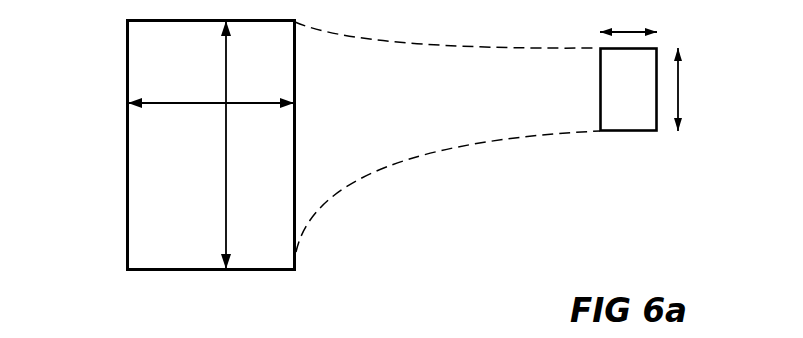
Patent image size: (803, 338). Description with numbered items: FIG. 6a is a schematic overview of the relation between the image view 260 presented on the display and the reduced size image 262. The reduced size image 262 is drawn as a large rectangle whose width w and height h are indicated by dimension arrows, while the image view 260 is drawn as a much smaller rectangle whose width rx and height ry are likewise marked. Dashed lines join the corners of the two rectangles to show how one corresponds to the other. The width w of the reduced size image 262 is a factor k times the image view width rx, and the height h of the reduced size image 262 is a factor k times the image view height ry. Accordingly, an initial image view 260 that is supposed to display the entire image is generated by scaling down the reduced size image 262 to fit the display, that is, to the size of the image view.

The reduced size image 262 is at (145, 119).
The image view 260 is at (638, 125).
The width of reduced size image w is at (211, 92).
The height of reduced size image h is at (238, 145).
The image view width rx is at (628, 18).
The image view height ry is at (694, 89).